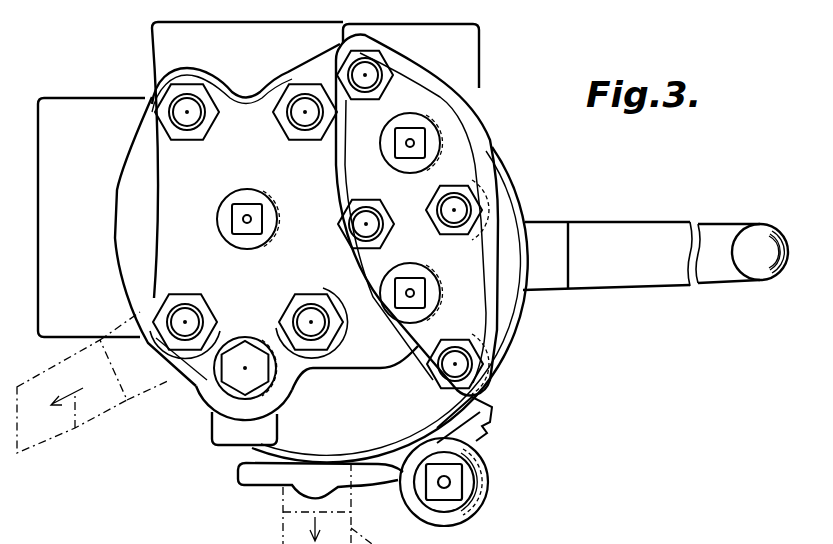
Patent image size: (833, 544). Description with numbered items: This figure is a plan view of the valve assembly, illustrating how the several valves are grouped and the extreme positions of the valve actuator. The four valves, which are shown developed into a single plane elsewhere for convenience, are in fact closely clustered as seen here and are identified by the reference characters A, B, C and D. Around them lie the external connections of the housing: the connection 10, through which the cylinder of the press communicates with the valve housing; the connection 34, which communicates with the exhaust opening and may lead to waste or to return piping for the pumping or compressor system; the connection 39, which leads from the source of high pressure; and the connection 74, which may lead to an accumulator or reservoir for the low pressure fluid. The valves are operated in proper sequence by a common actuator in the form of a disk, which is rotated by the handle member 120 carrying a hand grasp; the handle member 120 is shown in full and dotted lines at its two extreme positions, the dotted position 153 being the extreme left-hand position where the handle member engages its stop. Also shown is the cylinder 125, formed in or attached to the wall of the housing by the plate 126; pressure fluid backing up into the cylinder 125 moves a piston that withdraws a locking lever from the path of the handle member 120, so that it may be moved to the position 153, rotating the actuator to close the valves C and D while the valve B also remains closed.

The connection 10 is at (68, 269).
The connection 34 is at (159, 44).
The connection 39 is at (226, 437).
The connection 74 is at (474, 51).
The handle member 120 is at (643, 230).
The cylinder 125 is at (480, 480).
The plate 126 is at (477, 413).
The dotted position 153 is at (93, 396).
The valve A is at (232, 376).
The valve B is at (258, 212).
The valve C is at (415, 303).
The valve D is at (413, 137).